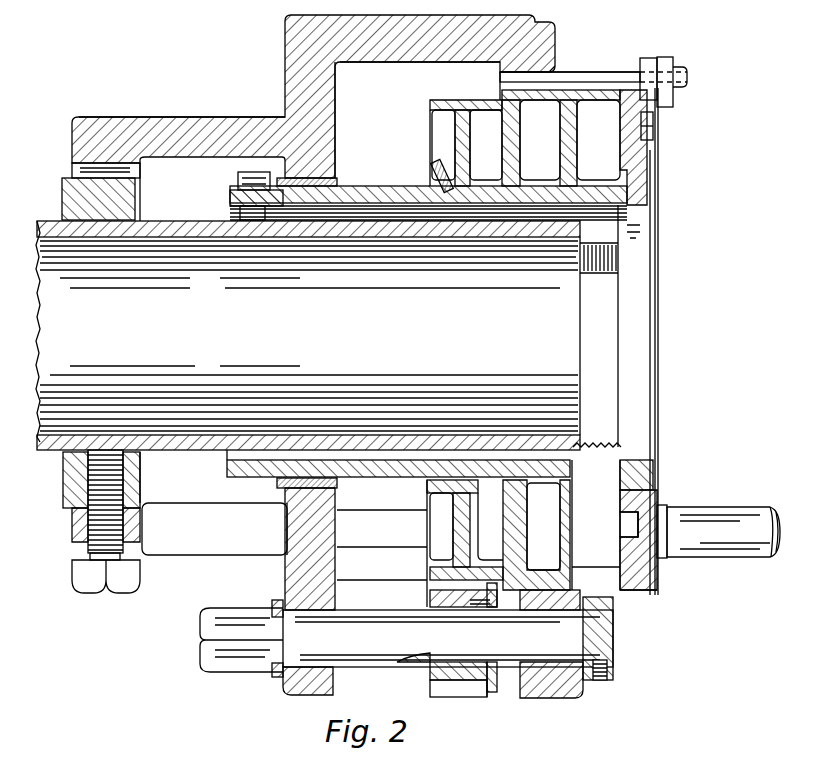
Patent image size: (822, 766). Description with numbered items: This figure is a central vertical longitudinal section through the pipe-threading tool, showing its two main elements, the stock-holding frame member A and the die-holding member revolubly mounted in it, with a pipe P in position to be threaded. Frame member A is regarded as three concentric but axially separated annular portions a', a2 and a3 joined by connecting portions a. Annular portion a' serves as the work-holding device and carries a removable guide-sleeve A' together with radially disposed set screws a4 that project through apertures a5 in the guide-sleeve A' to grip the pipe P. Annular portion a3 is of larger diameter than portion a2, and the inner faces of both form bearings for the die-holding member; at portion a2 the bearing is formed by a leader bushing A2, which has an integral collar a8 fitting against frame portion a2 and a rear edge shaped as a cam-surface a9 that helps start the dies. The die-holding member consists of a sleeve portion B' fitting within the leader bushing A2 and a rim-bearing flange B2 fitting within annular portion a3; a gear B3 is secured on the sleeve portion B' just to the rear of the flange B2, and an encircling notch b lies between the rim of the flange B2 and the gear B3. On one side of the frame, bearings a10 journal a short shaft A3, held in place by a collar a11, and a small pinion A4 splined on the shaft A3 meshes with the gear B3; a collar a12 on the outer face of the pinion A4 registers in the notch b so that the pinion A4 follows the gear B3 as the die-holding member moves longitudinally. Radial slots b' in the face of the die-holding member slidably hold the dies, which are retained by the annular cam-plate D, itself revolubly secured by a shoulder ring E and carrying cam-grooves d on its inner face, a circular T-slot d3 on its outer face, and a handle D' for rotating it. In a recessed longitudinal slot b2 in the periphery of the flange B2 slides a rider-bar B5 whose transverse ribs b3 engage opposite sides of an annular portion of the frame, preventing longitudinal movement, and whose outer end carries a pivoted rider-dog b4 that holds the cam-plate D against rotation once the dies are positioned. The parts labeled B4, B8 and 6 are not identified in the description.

The pipe P is at (308, 335).
The stock-holding frame member A is at (313, 96).
The connecting portions a is at (253, 348).
The annular portion a' is at (88, 328).
The annular portion a2 is at (338, 136).
The leader bushing A2 is at (420, 119).
The annular portion a3 is at (557, 70).
The packing gland B4 is at (199, 192).
The sleeve portion B' is at (427, 323).
The gear B3 is at (448, 118).
The lower bearing ring B8 is at (428, 586).
The rim-bearing flange B2 is at (578, 150).
The recessed longitudinal slot b2 is at (570, 140).
The annular plate D is at (633, 341).
The T-slot d3 is at (656, 124).
The rider-bar B5 is at (601, 72).
The rider-dog b4 is at (667, 102).
The transverse ribs b3 is at (567, 72).
The encircling notch b is at (522, 309).
The guide-sleeve A' is at (125, 479).
The apertures a5 is at (80, 506).
The set screws a4 is at (97, 591).
The cam-surface a9 is at (278, 488).
The collar a8 is at (283, 506).
The cam-grooves d is at (620, 520).
The radial slots b' is at (648, 536).
The lug 6 is at (625, 536).
The shoulder ring E is at (652, 482).
The handle D' is at (718, 520).
The short shaft A3 is at (406, 638).
The pinion A4 is at (447, 675).
The collar a12 is at (491, 693).
The bearings a10 is at (290, 691).
The collar a11 is at (600, 611).